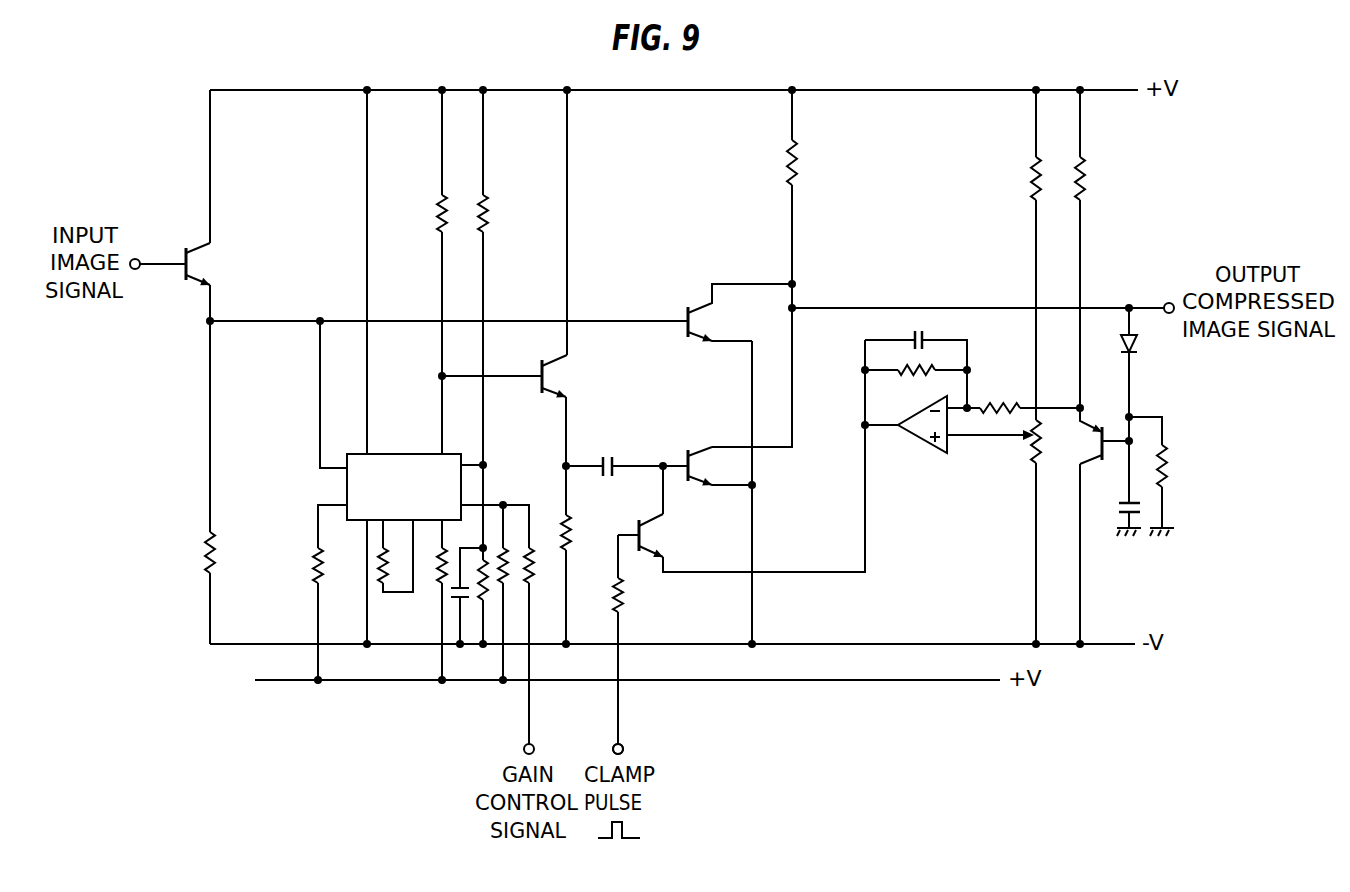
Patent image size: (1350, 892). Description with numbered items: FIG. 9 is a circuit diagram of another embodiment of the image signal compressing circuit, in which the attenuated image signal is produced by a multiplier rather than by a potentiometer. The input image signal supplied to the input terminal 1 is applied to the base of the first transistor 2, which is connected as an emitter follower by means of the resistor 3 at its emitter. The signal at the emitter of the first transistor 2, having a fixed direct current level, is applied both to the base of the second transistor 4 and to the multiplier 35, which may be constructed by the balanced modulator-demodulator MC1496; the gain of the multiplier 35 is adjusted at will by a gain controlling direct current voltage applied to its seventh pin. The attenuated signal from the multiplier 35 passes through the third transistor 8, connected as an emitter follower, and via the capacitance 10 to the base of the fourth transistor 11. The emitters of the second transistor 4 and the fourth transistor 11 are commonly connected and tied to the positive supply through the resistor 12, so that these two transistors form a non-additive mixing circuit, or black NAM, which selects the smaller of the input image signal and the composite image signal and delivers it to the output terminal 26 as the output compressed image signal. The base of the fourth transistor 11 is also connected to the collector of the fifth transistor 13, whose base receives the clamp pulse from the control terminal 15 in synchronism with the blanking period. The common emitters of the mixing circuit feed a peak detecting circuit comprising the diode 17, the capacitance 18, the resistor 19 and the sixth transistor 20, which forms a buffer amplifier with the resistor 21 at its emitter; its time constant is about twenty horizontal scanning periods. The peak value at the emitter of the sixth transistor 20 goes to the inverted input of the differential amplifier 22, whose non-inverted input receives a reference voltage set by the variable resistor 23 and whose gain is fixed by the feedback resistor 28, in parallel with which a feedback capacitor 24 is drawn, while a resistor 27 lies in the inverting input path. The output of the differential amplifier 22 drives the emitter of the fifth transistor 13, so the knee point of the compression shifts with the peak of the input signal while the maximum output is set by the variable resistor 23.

The input terminal 1 is at (141, 269).
The first transistor 2 is at (192, 248).
The resistor 3 is at (205, 550).
The second transistor 4 is at (703, 305).
The third transistor 8 is at (555, 378).
The capacitance 10 is at (598, 455).
The fourth transistor 11 is at (708, 450).
The resistor 12 is at (796, 160).
The fifth transistor 13 is at (655, 538).
The control terminal 15 is at (623, 749).
The diode 17 is at (1136, 345).
The capacitance 18 is at (1118, 512).
The resistor 19 is at (1168, 460).
The sixth transistor 20 is at (1090, 445).
The resistor 21 is at (1087, 172).
The differential amplifier 22 is at (928, 450).
The variable resistor 23 is at (1028, 462).
The feedback capacitor 24 is at (912, 334).
The output terminal 26 is at (1168, 300).
The resistor 27 is at (988, 402).
The resistor 28 is at (918, 378).
The multiplier 35 is at (420, 452).